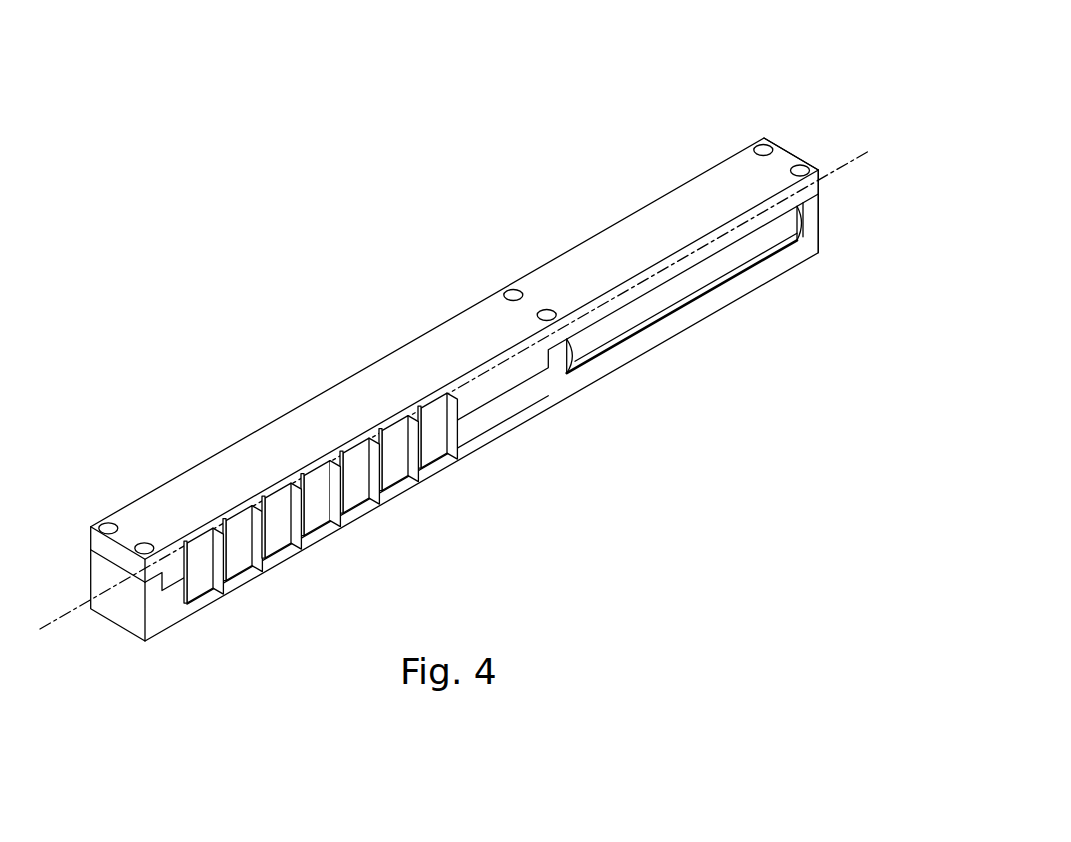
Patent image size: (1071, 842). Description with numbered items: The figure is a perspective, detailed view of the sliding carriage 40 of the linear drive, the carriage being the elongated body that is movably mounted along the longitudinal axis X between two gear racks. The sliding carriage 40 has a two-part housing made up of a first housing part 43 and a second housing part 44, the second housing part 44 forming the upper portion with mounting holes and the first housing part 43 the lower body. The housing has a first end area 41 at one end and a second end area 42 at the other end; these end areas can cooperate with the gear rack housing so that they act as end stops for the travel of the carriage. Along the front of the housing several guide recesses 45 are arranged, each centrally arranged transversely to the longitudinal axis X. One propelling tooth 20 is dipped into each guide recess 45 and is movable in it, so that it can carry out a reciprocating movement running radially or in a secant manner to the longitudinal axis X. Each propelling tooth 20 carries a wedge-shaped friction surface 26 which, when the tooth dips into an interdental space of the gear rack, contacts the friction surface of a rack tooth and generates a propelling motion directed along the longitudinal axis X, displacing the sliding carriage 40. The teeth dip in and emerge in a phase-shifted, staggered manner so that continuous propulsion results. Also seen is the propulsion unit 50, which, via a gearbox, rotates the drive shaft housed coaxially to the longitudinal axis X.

The propelling tooth 20 is at (282, 537).
The friction surfaces 26 is at (272, 528).
The sliding carriage 40 is at (216, 343).
The first end area 41 is at (115, 580).
The second end area 42 is at (826, 160).
The first housing part 43 is at (528, 397).
The second housing part 44 is at (430, 352).
The guide recesses 45 is at (350, 500).
The propulsion unit 50 is at (682, 300).
The longitudinal axis X is at (513, 358).